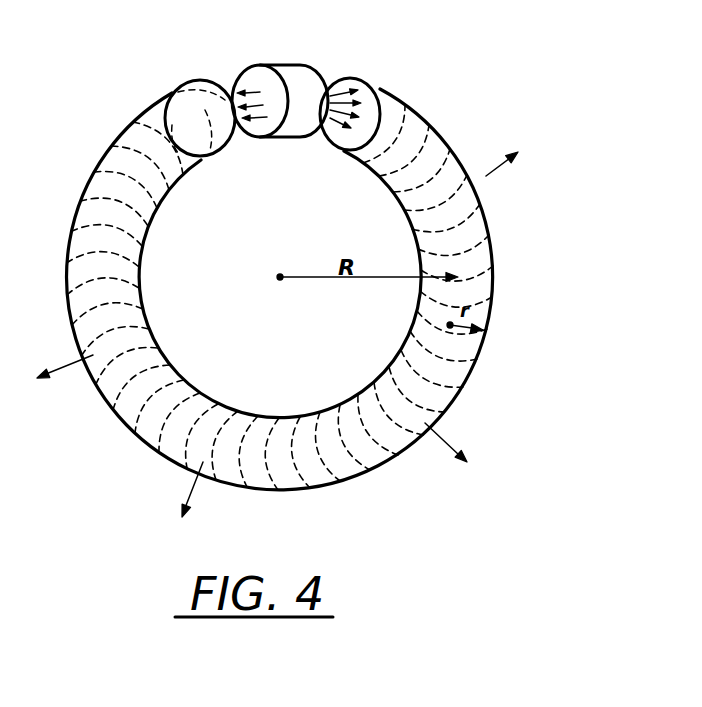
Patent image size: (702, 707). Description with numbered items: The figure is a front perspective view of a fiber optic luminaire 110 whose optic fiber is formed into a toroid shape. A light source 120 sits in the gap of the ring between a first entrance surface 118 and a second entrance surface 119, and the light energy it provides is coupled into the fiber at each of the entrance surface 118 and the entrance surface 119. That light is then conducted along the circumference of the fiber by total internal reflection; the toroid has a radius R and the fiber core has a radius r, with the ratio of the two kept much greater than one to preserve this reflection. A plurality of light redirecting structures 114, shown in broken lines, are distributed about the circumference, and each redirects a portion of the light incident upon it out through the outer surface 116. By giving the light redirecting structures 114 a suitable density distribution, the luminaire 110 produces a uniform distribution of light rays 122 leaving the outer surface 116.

The fiber optic luminaire 110 is at (528, 292).
The light redirecting structures 114 is at (480, 228).
The outer surface 116 is at (345, 470).
The first entrance surface 118 is at (372, 100).
The second entrance surface 119 is at (237, 50).
The light source 120 is at (288, 72).
The light rays 122 is at (463, 184).